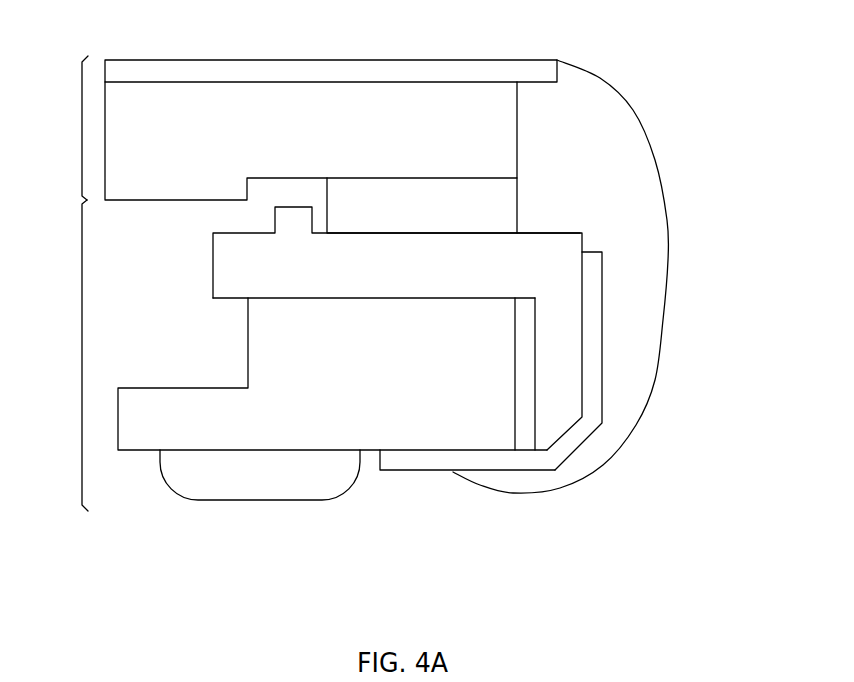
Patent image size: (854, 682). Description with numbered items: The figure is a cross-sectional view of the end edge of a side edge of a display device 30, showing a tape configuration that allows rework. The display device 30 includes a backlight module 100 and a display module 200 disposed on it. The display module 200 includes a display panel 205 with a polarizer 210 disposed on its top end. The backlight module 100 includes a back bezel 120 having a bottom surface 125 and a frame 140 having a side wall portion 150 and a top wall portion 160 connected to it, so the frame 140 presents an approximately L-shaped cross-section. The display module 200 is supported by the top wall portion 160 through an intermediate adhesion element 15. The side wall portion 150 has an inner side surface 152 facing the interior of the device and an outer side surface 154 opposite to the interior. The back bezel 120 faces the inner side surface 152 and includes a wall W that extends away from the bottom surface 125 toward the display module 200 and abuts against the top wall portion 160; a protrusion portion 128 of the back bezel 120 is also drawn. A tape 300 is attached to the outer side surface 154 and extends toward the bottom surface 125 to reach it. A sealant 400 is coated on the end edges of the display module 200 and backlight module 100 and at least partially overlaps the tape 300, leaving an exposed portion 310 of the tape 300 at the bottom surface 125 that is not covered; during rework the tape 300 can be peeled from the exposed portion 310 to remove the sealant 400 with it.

The display device 30 is at (74, 23).
The backlight module 100 is at (61, 355).
The display module 200 is at (61, 128).
The display panel 205 is at (353, 142).
The polarizer 210 is at (533, 70).
The intermediate adhesion element 15 is at (429, 221).
The sealant 400 is at (591, 163).
The top wall portion 160 is at (373, 284).
The wall W is at (388, 402).
The frame 140 is at (562, 302).
The side wall portion 150 is at (482, 450).
The inner side surface 152 is at (482, 450).
The outer side surface 154 is at (582, 382).
The tape 300 is at (527, 458).
The exposed portion 310 is at (449, 477).
The back bezel 120 is at (242, 437).
The bottom surface 125 is at (282, 451).
The protrusion portion 128 is at (185, 470).